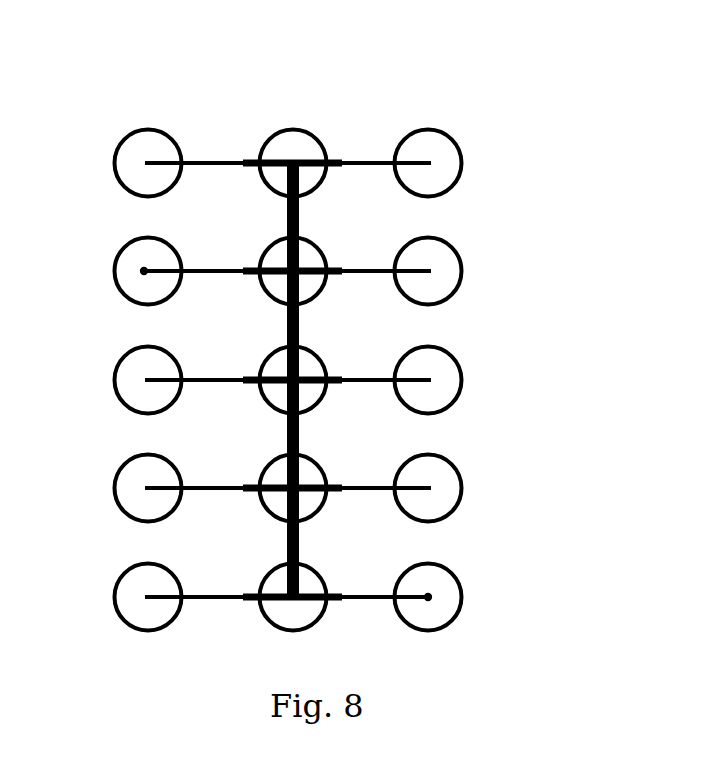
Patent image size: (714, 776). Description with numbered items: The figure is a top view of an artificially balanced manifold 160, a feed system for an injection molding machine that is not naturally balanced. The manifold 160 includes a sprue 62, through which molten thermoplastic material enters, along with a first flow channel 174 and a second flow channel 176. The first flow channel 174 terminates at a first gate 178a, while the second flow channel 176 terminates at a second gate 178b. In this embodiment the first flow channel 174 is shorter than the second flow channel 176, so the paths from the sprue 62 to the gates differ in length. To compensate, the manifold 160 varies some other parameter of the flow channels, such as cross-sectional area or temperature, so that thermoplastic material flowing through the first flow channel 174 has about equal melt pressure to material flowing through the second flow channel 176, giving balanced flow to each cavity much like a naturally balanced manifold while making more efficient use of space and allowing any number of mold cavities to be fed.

The artificially balanced manifold 160 is at (375, 100).
The first flow channel 174 is at (213, 267).
The second flow channel 176 is at (295, 436).
The first gate 178a is at (144, 271).
The second gate 178b is at (428, 597).
The sprue 62 is at (297, 377).